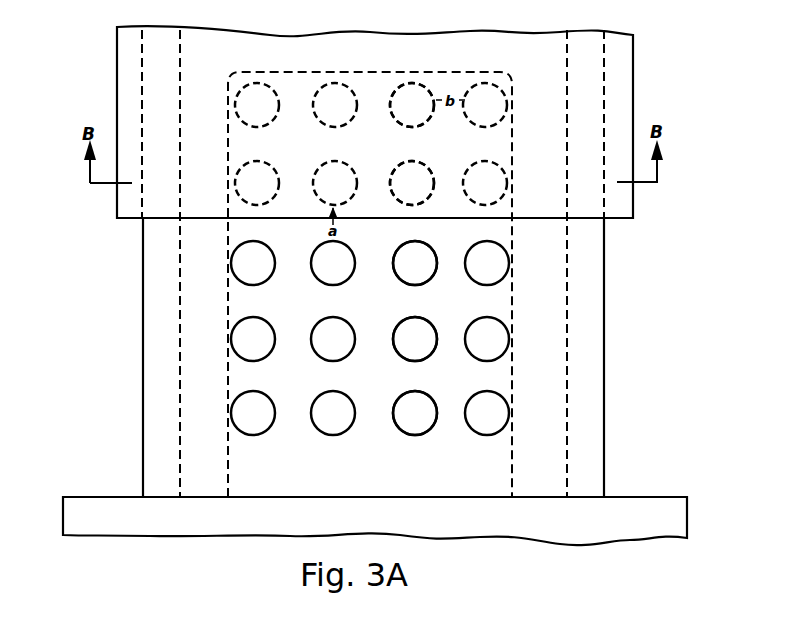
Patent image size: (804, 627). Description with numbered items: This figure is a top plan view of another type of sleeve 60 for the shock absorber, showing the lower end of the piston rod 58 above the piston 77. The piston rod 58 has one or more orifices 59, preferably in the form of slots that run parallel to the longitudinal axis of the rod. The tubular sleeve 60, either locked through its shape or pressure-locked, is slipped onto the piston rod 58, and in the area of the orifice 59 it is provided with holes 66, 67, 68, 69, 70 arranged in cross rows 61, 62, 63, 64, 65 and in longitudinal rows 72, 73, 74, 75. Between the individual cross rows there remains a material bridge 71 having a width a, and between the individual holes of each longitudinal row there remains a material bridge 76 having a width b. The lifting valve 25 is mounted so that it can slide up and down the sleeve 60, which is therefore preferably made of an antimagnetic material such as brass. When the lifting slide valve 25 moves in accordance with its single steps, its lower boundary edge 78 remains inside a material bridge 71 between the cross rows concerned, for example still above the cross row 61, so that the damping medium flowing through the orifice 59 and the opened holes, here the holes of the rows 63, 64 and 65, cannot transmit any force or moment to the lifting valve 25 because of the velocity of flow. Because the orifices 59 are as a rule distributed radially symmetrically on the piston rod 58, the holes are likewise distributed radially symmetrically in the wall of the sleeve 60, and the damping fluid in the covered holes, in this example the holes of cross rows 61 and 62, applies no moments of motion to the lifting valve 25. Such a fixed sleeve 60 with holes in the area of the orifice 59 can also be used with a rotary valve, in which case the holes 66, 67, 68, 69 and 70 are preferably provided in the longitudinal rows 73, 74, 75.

The lifting valve 25 is at (622, 81).
The piston rod 58 is at (567, 409).
The orifice 59 is at (290, 77).
The sleeve 60 is at (604, 335).
The cross row 61 is at (233, 105).
The cross row 62 is at (233, 183).
The cross row 63 is at (229, 263).
The cross row 64 is at (229, 339).
The cross row 65 is at (229, 415).
The hole 66 is at (418, 86).
The hole 67 is at (412, 160).
The hole 68 is at (415, 241).
The hole 69 is at (415, 316).
The hole 70 is at (415, 390).
The material bridge 71 is at (258, 144).
The longitudinal row 72 is at (257, 82).
The longitudinal row 73 is at (335, 82).
The longitudinal row 74 is at (412, 82).
The longitudinal row 75 is at (485, 82).
The material bridge 76 is at (293, 415).
The piston 77 is at (191, 527).
The lower boundary edge 78 is at (631, 218).